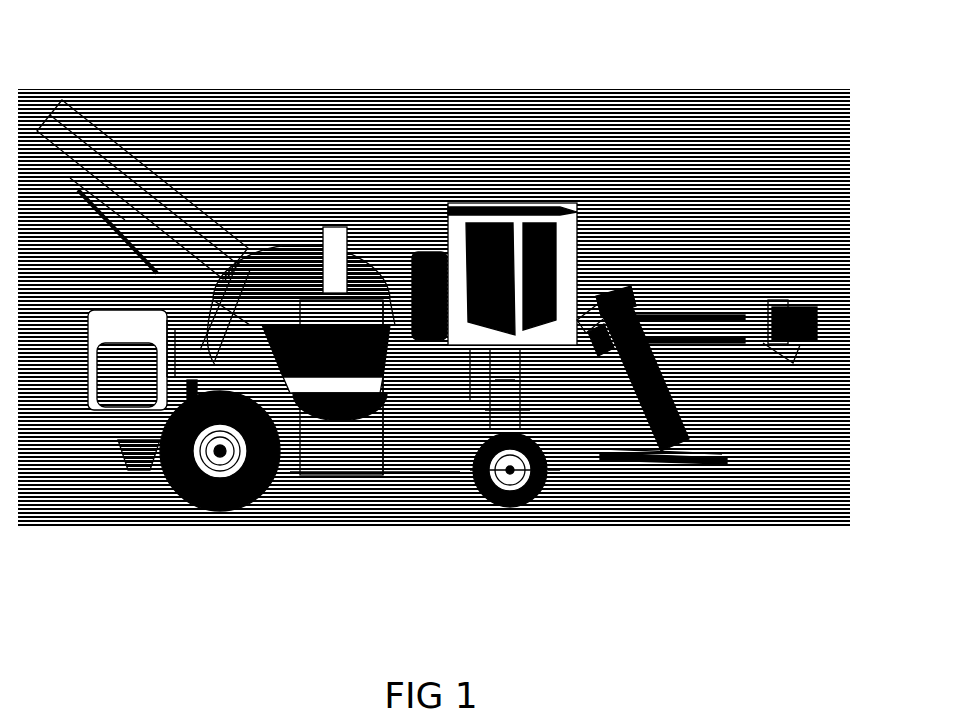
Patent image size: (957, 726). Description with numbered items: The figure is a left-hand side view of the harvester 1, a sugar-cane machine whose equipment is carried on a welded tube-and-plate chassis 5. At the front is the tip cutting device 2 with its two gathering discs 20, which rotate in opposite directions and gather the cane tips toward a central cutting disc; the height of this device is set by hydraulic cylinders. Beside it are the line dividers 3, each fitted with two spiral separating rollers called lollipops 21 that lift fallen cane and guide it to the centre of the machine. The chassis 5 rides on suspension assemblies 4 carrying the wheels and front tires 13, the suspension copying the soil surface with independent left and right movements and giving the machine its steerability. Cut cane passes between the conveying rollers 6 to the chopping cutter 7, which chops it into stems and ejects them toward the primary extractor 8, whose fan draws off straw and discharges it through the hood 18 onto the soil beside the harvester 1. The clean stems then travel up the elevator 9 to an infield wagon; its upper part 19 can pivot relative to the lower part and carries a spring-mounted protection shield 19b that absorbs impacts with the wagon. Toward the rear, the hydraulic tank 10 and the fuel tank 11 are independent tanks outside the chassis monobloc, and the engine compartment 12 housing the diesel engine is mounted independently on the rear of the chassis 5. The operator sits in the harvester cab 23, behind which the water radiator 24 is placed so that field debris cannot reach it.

The harvester 1 is at (535, 177).
The tip cutting device 2 is at (752, 300).
The line dividers 3 is at (707, 443).
The suspension assembly 4 is at (558, 458).
The chassis 5 is at (413, 467).
The conveying rollers 6 is at (425, 408).
The chopping cutter 7 is at (413, 377).
The primary extractor 8 is at (320, 245).
The elevator 9 is at (238, 355).
The hydraulic tank 10 is at (167, 377).
The fuel tank 11 is at (148, 457).
The engine compartment 12 is at (90, 352).
The front tires 13 is at (240, 508).
The hood 18 is at (253, 252).
The upper part of the elevator 19 is at (80, 123).
The protection shield 19b is at (123, 233).
The gathering discs 20 is at (817, 312).
The lollipops 21 is at (637, 320).
The harvester cab 23 is at (577, 250).
The water radiator 24 is at (427, 250).